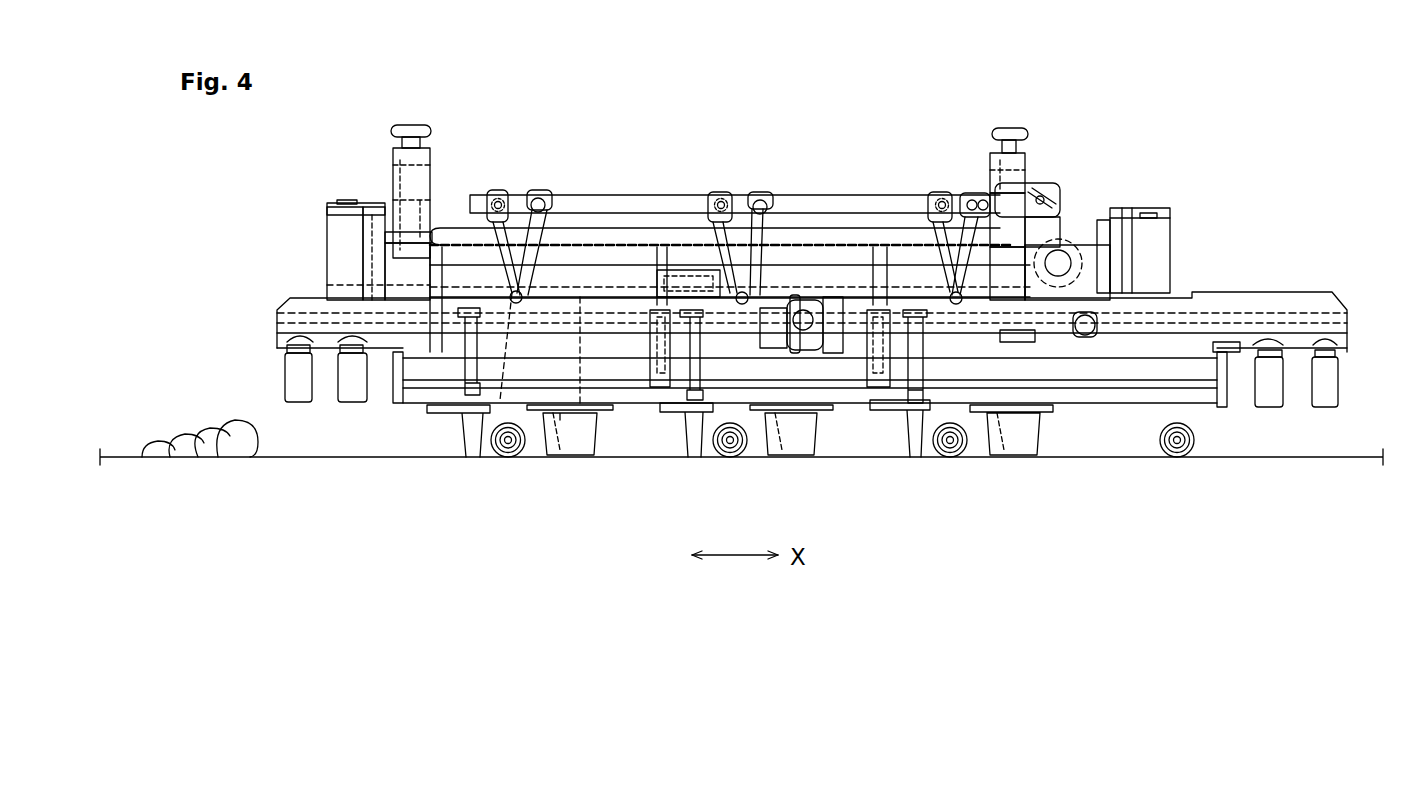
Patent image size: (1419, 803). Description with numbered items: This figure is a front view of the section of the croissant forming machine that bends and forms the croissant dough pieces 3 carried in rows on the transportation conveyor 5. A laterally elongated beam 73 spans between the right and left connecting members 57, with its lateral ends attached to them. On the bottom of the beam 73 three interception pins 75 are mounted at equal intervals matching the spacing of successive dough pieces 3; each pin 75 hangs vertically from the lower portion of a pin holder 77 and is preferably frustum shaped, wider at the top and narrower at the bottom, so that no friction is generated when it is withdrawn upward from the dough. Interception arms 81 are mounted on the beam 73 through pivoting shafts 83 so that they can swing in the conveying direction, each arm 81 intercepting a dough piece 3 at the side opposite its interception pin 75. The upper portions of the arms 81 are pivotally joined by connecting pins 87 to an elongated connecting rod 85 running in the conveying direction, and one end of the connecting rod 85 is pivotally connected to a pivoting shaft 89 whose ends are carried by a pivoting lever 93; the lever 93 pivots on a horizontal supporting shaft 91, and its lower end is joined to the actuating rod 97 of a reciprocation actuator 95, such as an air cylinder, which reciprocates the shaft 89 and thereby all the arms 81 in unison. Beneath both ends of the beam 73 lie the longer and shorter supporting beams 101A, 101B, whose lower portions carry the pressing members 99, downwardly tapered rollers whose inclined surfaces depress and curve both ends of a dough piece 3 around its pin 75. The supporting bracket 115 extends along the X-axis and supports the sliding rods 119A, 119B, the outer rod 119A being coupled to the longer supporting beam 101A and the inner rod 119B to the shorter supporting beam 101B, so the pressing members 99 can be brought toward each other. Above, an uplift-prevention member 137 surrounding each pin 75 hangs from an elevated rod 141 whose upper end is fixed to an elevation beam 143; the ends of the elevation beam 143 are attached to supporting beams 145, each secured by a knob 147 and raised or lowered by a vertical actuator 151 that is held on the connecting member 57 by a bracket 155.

The croissant dough piece 3 is at (236, 443).
The transportation conveyor 5 is at (1347, 453).
The connecting member 57 is at (338, 252).
The beam 73 is at (597, 300).
The interception pin 75 is at (470, 430).
The pin holder 77 is at (692, 345).
The interception arm 81 is at (490, 222).
The pivoting shaft 83 is at (507, 300).
The connecting rod 85 is at (842, 203).
The connecting pin 87 is at (508, 200).
The pivoting shaft (reciprocating shaft) 89 is at (1040, 192).
The horizontal supporting shaft 91 is at (1063, 267).
The pivoting lever 93 is at (1053, 240).
The reciprocation actuator 95 is at (858, 352).
The actuating rod 97 is at (1020, 340).
The pressing member 99 is at (588, 447).
The supporting beam 101A is at (1114, 520).
The supporting beam 101B is at (1124, 395).
The supporting bracket 115 is at (1282, 300).
The sliding rod 119A is at (298, 372).
The sliding rod 119B is at (353, 392).
The uplift-prevention member 137 is at (655, 403).
The elevated rod 141 is at (668, 247).
The elevation beam 143 is at (656, 240).
The supporting beam 145 is at (385, 203).
The knob 147 is at (415, 128).
The vertical actuator 151 is at (407, 278).
The bracket 155 is at (390, 238).